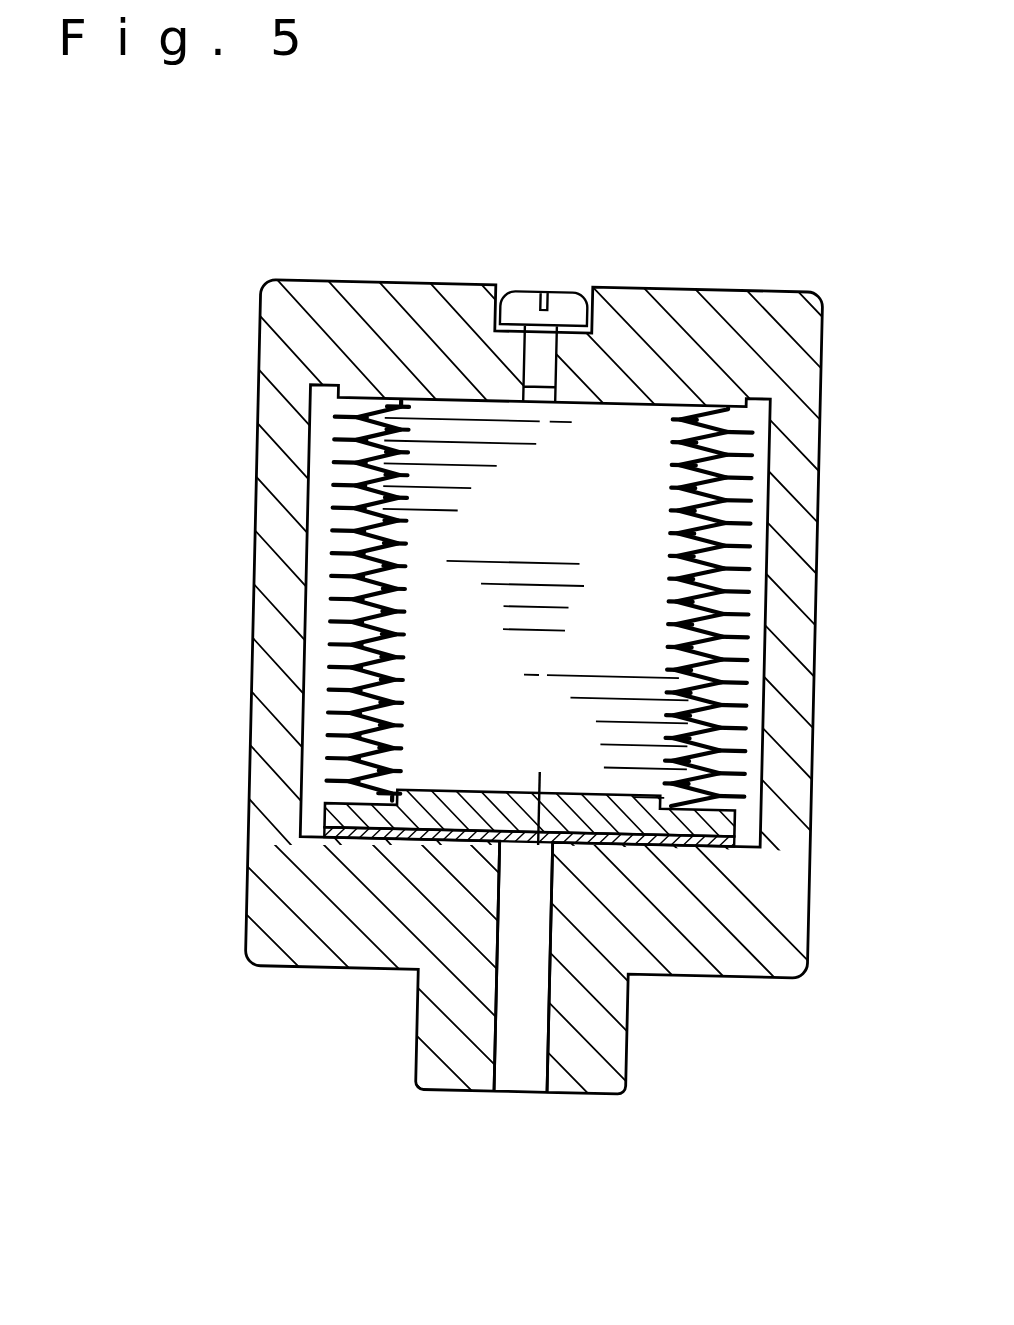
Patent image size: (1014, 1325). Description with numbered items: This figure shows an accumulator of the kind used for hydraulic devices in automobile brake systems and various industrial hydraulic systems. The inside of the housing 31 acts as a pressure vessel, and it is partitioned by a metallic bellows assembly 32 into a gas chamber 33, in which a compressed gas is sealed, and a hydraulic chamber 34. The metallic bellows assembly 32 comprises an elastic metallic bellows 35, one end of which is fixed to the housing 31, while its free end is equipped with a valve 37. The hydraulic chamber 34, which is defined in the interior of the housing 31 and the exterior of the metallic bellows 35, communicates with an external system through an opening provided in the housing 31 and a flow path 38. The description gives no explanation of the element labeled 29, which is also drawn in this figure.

The diaphragm plate 29 is at (425, 840).
The housing 31 is at (790, 915).
The metallic bellows assembly 32 is at (534, 729).
The gas chamber 33 is at (645, 599).
The hydraulic chamber 34 is at (748, 632).
The metallic bellows 35 is at (735, 472).
The valve 37 is at (690, 842).
The flow path 38 is at (516, 990).